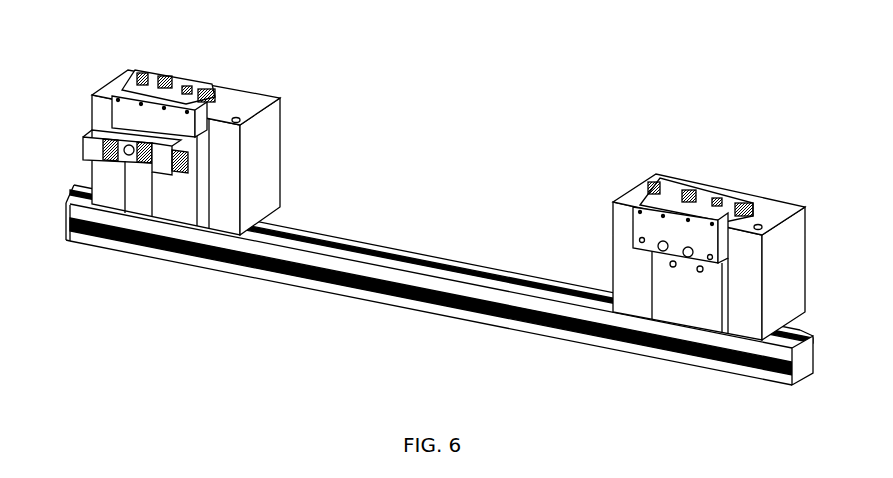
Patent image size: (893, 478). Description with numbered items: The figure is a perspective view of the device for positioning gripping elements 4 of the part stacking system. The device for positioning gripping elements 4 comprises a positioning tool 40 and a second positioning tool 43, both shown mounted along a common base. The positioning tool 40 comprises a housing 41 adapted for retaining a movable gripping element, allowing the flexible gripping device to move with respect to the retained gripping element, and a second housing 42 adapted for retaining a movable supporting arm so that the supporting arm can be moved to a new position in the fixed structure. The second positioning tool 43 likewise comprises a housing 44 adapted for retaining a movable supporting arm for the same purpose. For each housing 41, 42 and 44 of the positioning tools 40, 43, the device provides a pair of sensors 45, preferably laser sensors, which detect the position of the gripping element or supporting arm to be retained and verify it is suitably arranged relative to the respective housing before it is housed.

The device for positioning gripping elements 4 is at (435, 125).
The positioning tool 40 is at (270, 135).
The housing 41 is at (115, 132).
The second housing 42 is at (178, 80).
The second positioning tool 43 is at (770, 210).
The housing 44 is at (702, 180).
The sensors 45 is at (115, 73).